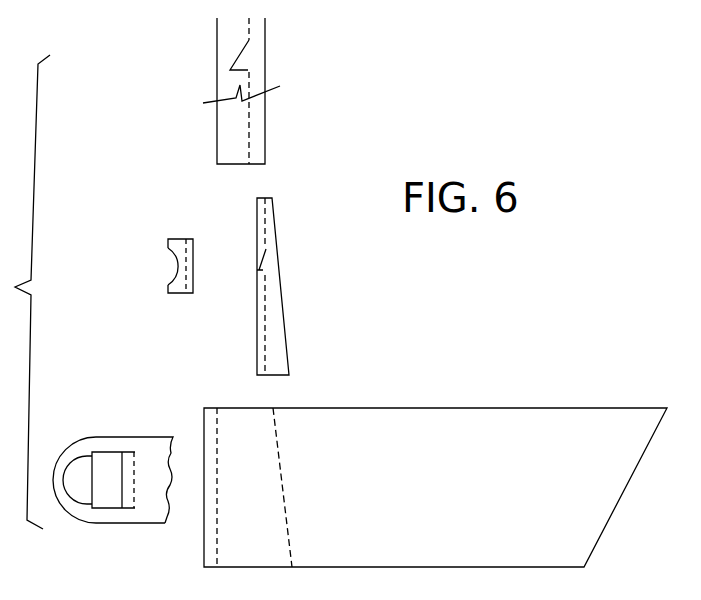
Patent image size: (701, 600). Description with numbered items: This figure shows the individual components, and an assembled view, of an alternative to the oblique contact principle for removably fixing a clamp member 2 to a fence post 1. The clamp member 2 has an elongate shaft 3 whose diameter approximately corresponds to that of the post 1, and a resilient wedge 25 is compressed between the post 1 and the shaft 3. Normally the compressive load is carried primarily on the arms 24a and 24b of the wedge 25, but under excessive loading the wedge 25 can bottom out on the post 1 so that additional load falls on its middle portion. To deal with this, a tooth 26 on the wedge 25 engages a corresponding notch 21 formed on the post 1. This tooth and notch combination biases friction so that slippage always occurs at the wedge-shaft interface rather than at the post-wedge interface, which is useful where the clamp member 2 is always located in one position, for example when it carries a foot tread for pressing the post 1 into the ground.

The post 1 is at (262, 127).
The clamp member 2 is at (416, 503).
The shaft 3 is at (129, 462).
The notch 21 is at (254, 60).
The arm of the wedge 24a is at (168, 239).
The arm of the wedge 24b is at (168, 287).
The wedge 25 is at (278, 345).
The tooth 26 is at (178, 262).